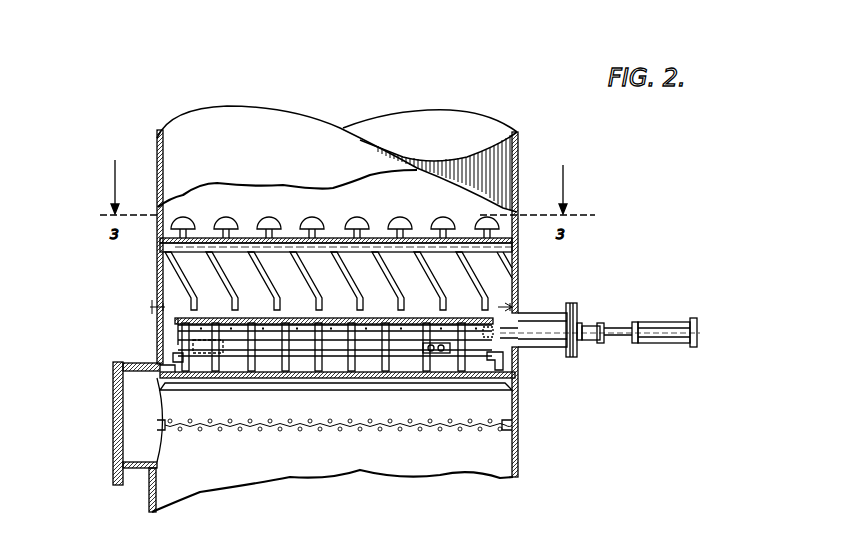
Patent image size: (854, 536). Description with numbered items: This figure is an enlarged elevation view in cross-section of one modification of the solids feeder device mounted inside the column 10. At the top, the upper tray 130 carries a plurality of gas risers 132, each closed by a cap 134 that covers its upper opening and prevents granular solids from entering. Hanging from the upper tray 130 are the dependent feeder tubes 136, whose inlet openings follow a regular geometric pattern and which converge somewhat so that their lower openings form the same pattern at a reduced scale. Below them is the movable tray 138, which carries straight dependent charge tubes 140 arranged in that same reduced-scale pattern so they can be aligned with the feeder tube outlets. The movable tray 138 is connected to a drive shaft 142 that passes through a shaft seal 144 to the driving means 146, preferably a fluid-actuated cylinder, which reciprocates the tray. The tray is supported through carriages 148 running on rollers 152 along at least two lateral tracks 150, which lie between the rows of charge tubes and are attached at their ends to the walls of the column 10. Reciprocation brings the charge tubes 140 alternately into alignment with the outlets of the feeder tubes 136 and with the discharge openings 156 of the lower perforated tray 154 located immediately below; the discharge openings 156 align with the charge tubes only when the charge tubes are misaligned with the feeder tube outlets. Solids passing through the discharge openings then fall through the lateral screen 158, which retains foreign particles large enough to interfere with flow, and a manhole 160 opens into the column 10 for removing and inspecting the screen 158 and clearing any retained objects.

The column 10 is at (213, 138).
The upper tray 130 is at (515, 248).
The gas risers 132 is at (269, 217).
The cap 134 is at (443, 217).
The dependent feeder tubes 136 is at (255, 274).
The movable tray 138 is at (175, 320).
The dependent charge tubes 140 is at (360, 365).
The drive shaft 142 is at (523, 327).
The shaft seal 144 is at (588, 323).
The driving means 146 is at (663, 327).
The carriages 148 is at (190, 345).
The lateral tracks 150 is at (303, 367).
The rollers 152 is at (190, 376).
The lower perforated tray 154 is at (352, 385).
The discharge openings 156 is at (245, 385).
The lateral screen 158 is at (452, 428).
The manhole 160 is at (137, 421).